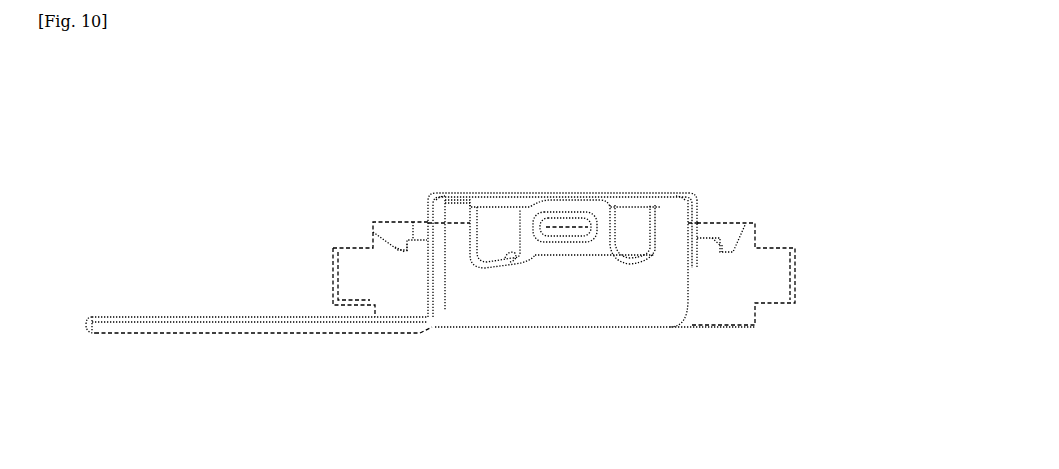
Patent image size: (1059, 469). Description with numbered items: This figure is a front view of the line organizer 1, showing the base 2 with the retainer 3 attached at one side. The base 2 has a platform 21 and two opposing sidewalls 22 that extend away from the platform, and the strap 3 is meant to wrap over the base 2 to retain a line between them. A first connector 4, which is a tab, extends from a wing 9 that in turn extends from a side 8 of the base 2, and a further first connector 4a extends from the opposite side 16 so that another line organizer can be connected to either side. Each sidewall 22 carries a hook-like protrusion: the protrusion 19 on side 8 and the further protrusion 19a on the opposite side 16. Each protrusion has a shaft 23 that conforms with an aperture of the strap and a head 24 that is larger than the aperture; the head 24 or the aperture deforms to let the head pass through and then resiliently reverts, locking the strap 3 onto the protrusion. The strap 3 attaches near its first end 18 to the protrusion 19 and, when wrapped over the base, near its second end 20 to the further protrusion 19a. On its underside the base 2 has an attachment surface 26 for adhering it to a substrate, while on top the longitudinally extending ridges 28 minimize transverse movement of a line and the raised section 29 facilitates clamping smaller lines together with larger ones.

The line organizer 1 is at (768, 143).
The base 2 is at (502, 327).
The retainer 3 is at (172, 317).
The first connector 4 is at (348, 240).
The further first connector 4a is at (777, 247).
The side 8 is at (298, 270).
The wing 9 is at (373, 227).
The opposite side 16 is at (823, 273).
The first end 18 is at (92, 323).
The protrusion 19 is at (412, 218).
The further protrusion 19a is at (722, 223).
The second end 20 is at (690, 260).
The platform 21 is at (495, 262).
The sidewalls 22 is at (458, 207).
The shaft 23 is at (412, 250).
The head 24 is at (395, 247).
The attachment surface 26 is at (628, 328).
The longitudinally extending ridges 28 is at (612, 210).
The raised section 29 is at (565, 258).